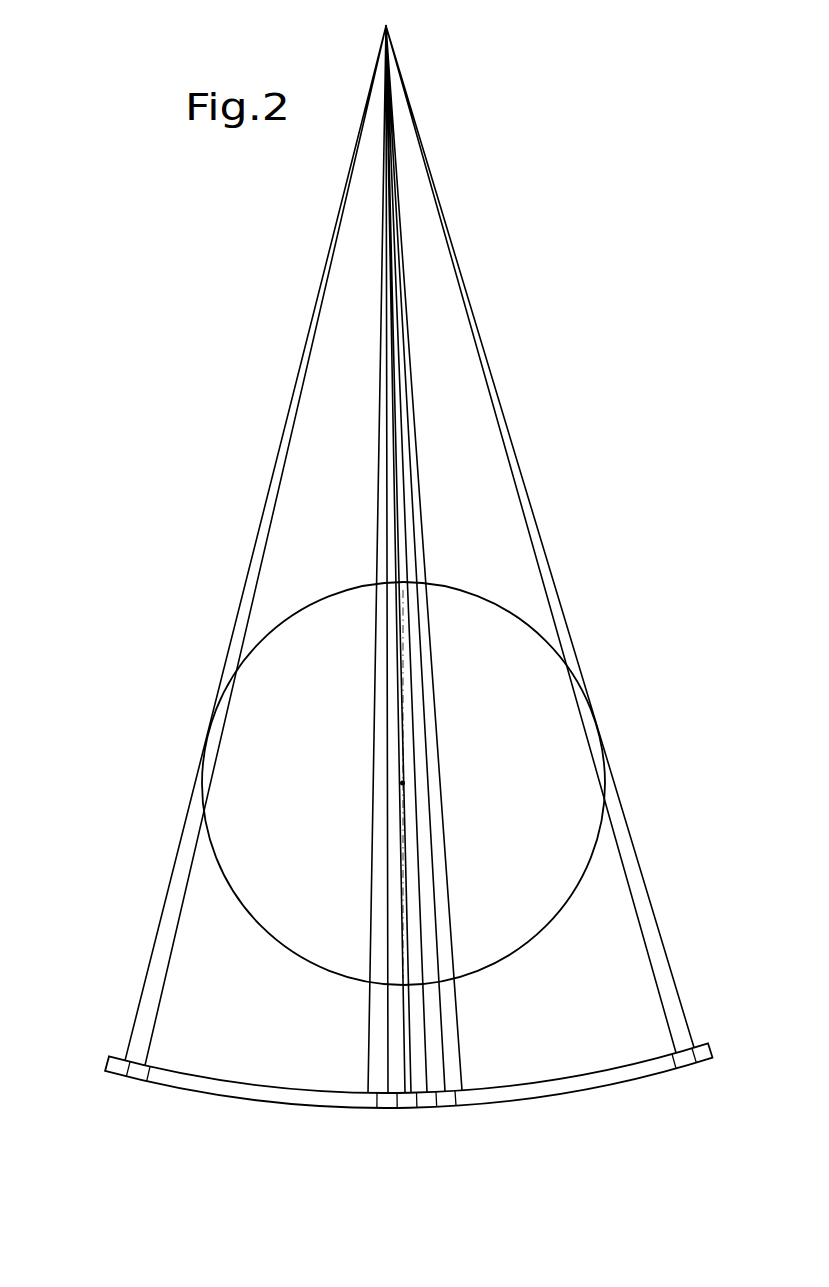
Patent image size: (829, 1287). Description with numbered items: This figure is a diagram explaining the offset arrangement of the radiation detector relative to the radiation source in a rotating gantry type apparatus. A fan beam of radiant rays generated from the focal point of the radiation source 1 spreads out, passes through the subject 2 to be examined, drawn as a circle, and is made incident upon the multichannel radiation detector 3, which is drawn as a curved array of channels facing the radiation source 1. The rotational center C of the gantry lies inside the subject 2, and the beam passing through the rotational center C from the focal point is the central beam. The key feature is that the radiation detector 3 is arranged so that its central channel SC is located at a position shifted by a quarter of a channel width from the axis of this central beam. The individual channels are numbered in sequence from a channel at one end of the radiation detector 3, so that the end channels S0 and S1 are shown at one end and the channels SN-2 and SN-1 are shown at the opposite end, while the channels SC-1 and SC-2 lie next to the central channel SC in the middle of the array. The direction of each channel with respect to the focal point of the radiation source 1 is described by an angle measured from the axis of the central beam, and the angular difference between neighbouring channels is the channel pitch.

The radiation source 1 is at (388, 25).
The subject 2 is at (468, 592).
The rotational center C is at (403, 783).
The multichannel radiation detector 3 is at (570, 1077).
The channel SN-1 is at (115, 1077).
The channel SN-2 is at (140, 1080).
The central channel SC is at (409, 1108).
The channel SC-1 is at (428, 1108).
The channel SC-2 is at (446, 1107).
The channel S1 is at (685, 1066).
The channel S0 is at (703, 1058).